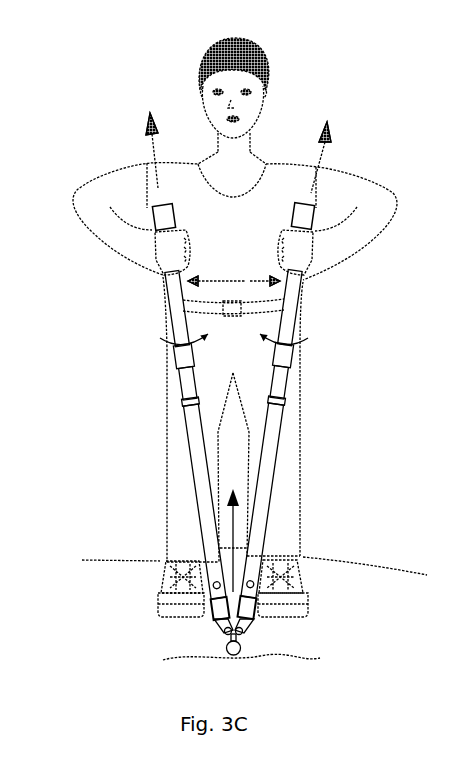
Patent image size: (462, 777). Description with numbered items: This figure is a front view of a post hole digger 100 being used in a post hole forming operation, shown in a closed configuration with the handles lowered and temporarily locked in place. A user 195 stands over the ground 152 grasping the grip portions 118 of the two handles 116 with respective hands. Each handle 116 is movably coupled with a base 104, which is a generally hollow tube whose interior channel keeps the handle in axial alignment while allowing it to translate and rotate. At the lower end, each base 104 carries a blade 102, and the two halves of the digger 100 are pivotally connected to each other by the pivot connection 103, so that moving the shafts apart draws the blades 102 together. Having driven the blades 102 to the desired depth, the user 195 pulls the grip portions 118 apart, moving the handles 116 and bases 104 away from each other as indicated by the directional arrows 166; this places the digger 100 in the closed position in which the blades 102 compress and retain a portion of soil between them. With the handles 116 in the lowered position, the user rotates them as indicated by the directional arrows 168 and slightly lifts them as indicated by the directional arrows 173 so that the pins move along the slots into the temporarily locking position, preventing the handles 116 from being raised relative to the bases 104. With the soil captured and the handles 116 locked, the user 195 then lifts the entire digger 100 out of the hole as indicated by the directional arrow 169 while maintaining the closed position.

The post hole digger 100 is at (234, 384).
The blade 102 is at (213, 651).
The pivot connection 103 is at (263, 636).
The base 104 is at (190, 463).
The handle 116 is at (156, 298).
The grip portion 118 is at (164, 206).
The ground 152 is at (369, 567).
The directional arrows 166 is at (230, 277).
The directional arrows 168 is at (157, 338).
The directional arrow 169 is at (233, 533).
The directional arrows 173 is at (152, 151).
The user 195 is at (157, 394).